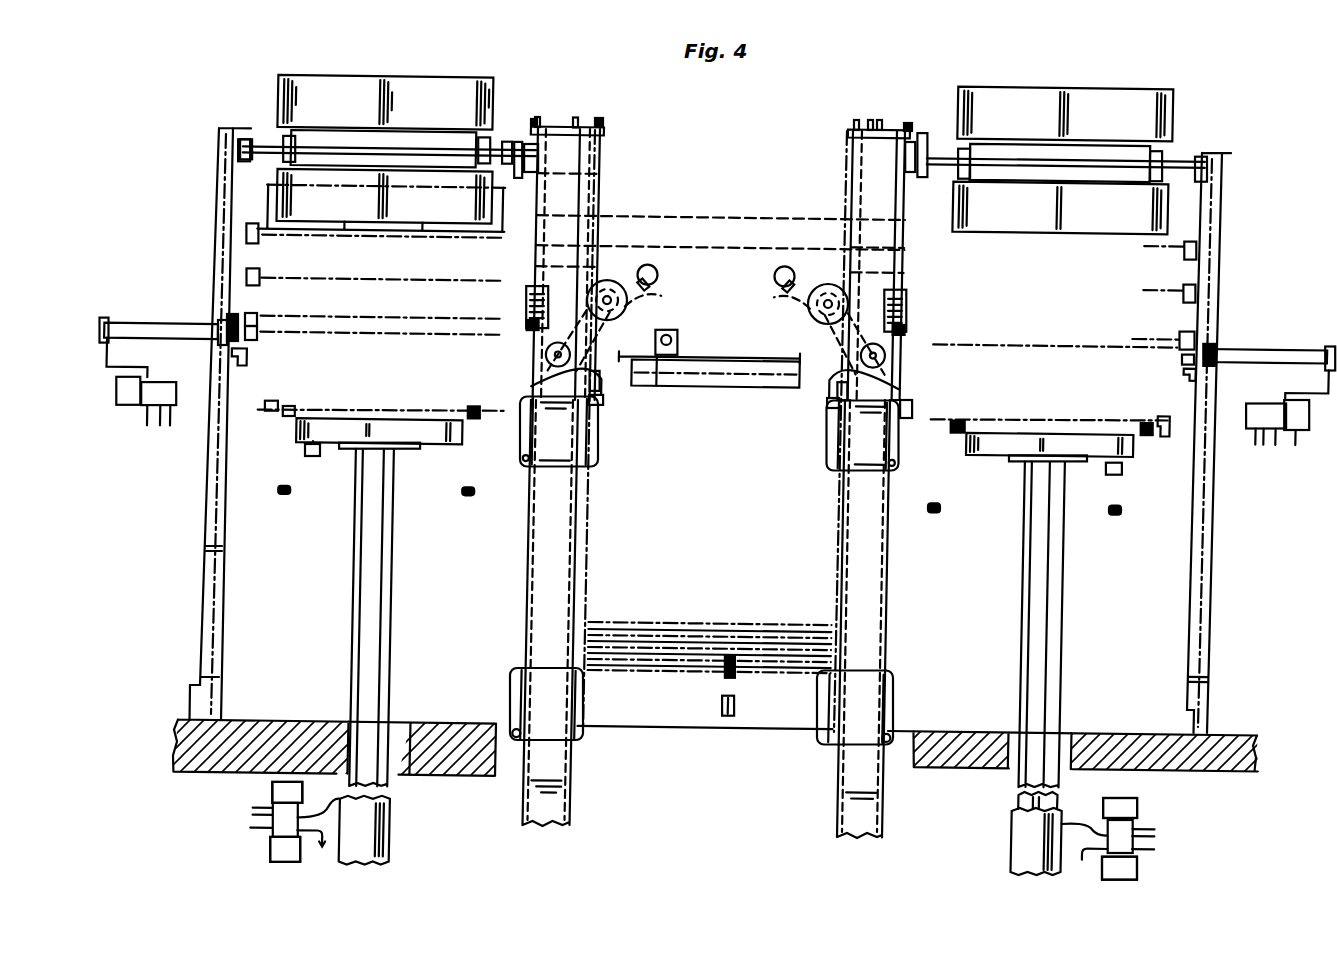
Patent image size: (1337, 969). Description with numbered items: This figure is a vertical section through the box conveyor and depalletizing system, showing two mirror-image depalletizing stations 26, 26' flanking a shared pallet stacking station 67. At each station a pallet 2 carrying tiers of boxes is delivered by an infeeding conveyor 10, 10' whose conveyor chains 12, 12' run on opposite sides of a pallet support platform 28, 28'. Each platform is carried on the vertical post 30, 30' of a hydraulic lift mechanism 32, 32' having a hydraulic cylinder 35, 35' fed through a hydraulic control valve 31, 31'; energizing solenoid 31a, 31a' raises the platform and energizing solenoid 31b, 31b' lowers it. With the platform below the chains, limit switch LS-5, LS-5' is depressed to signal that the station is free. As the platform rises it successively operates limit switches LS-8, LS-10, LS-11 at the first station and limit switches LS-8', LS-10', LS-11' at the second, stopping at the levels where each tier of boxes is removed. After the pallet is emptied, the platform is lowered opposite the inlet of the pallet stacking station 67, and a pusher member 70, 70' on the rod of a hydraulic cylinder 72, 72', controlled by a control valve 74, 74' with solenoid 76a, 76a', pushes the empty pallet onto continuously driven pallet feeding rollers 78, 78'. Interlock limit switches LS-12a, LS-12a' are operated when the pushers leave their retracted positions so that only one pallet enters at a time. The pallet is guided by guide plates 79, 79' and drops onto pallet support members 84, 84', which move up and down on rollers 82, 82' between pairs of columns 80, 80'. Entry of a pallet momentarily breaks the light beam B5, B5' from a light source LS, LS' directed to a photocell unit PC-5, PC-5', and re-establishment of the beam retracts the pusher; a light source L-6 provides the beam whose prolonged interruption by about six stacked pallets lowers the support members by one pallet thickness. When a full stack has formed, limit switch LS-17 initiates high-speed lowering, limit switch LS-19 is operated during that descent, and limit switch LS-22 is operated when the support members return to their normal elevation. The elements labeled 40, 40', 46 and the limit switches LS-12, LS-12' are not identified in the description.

The depalletizing station 26 is at (215, 393).
The upper roll 40 is at (385, 82).
The lower roll 46 is at (268, 193).
The limit switch LS-11 is at (196, 224).
The limit switch LS-10 is at (197, 263).
The limit switch LS-8 is at (203, 298).
The limit switch LS-12 is at (295, 345).
The interlock limit switch LS-12a is at (278, 368).
The pallet 2 is at (394, 258).
The hydraulic cylinder 72 is at (164, 314).
The pusher member 70 is at (201, 316).
The solenoid 76a is at (105, 403).
The control valve 74 is at (146, 416).
The infeeding conveyor chain 12 is at (381, 409).
The pallet support platform 28 is at (390, 461).
The vertical post 30 is at (344, 618).
The limit switch LS-5 is at (276, 458).
The infeeding conveyor 10 is at (354, 513).
The hydraulic control valve 31 is at (241, 822).
The solenoid 31b is at (249, 796).
The solenoid 31a is at (243, 851).
The hydraulic cylinder 35 is at (318, 813).
The hydraulic lift mechanism 32 is at (392, 830).
The column 80 is at (578, 471).
The pallet stacking station 67 is at (722, 216).
The column 80' is at (841, 479).
The pallet feeding roller 78 is at (559, 327).
The guide plate 79 is at (550, 383).
The photocell unit PC-5 is at (619, 385).
The light beam B5 is at (620, 327).
The light source LS is at (671, 273).
The pallet feeding roller 78' is at (877, 328).
The guide plate 79' is at (887, 384).
The photocell unit PC-5' is at (794, 401).
The light beam B5' is at (813, 332).
The light source LS' is at (761, 273).
The light source L-6 is at (674, 332).
The pallet support member 84 is at (620, 411).
The roller 82 is at (538, 432).
The pallet support member 84' is at (799, 422).
The roller 82' is at (836, 437).
The limit switch LS-17 is at (740, 675).
The limit switch LS-19 is at (735, 718).
The limit switch LS-22 is at (922, 407).
The depalletizing station 26' is at (1046, 397).
The upper roll 40' is at (1065, 91).
The limit switch LS-11' is at (1242, 239).
The limit switch LS-10' is at (1242, 281).
The limit switch LS-8' is at (1229, 321).
The limit switch LS-12' is at (1155, 370).
The interlock limit switch LS-12a' is at (1156, 387).
The hydraulic cylinder 72' is at (1271, 342).
The pusher member 70' is at (1232, 339).
The solenoid 76a' is at (1310, 437).
The control valve 74' is at (1274, 454).
The infeeding conveyor chain 12' is at (1049, 443).
The pallet support platform 28' is at (1033, 480).
The vertical post 30' is at (1016, 625).
The limit switch LS-5' is at (1108, 502).
The infeeding conveyor 10' is at (1014, 526).
The hydraulic lift mechanism 32' is at (997, 833).
The hydraulic cylinder 35' is at (1085, 826).
The hydraulic control valve 31' is at (1169, 839).
The solenoid 31b' is at (1158, 809).
The solenoid 31a' is at (1159, 871).